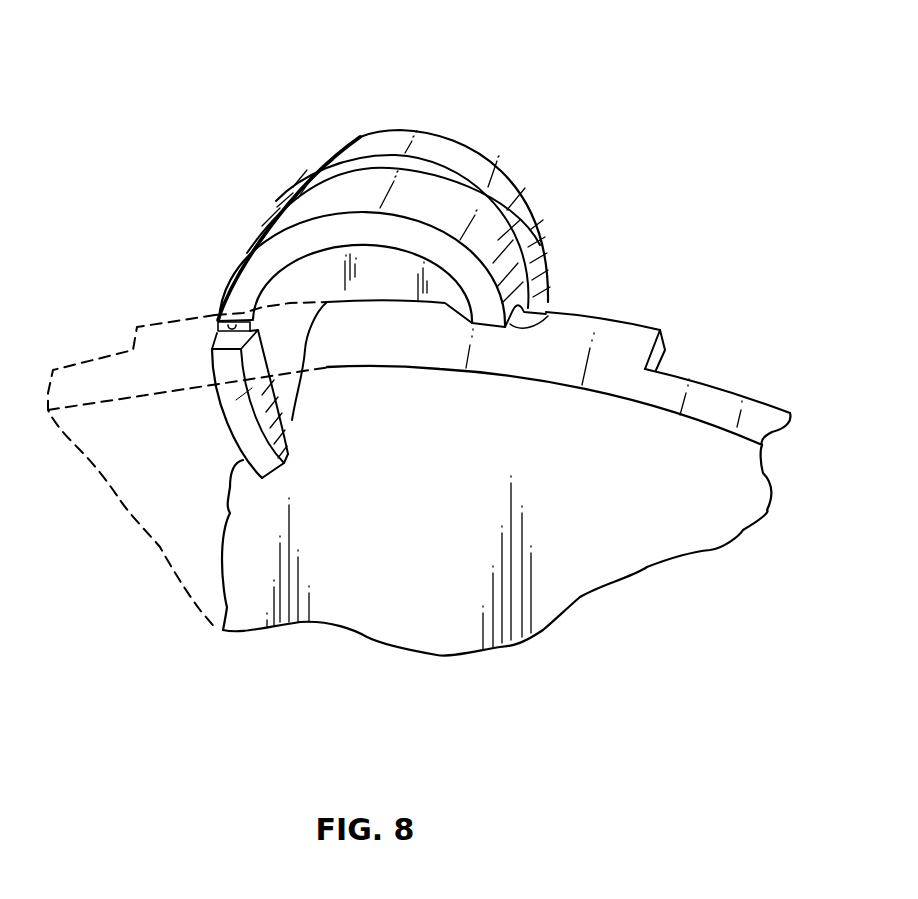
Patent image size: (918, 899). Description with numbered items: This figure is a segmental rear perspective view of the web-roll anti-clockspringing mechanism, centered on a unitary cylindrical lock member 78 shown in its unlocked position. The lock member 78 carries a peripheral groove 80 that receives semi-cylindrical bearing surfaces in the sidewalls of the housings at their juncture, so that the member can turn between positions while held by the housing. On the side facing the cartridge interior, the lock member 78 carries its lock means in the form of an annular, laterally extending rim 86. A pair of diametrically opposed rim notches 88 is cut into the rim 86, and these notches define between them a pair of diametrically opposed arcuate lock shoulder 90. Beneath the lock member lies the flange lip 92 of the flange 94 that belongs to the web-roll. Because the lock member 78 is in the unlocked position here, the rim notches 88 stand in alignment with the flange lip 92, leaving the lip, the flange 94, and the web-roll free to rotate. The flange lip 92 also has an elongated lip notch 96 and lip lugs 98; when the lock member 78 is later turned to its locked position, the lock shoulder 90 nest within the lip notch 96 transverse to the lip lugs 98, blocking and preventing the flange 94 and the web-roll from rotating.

The lock member 78 is at (481, 113).
The peripheral groove 80 is at (505, 207).
The rim 86 is at (247, 250).
The rim notches 88 is at (223, 316).
The lock shoulder 90 is at (473, 283).
The flange lip 92 is at (663, 322).
The flange 94 is at (347, 489).
The lip notch 96 is at (723, 388).
The lip lugs 98 is at (658, 328).